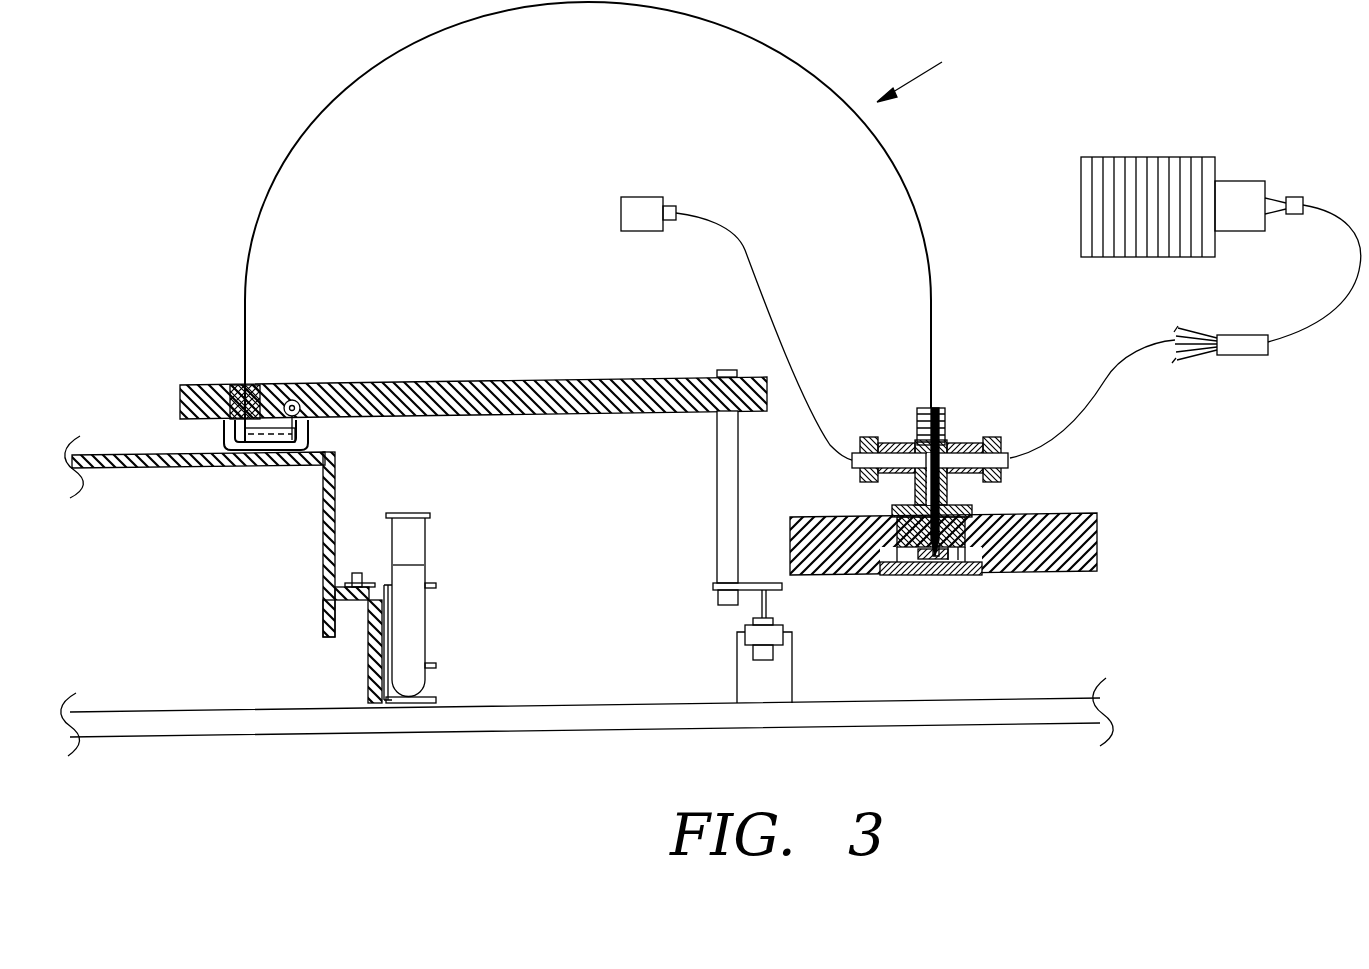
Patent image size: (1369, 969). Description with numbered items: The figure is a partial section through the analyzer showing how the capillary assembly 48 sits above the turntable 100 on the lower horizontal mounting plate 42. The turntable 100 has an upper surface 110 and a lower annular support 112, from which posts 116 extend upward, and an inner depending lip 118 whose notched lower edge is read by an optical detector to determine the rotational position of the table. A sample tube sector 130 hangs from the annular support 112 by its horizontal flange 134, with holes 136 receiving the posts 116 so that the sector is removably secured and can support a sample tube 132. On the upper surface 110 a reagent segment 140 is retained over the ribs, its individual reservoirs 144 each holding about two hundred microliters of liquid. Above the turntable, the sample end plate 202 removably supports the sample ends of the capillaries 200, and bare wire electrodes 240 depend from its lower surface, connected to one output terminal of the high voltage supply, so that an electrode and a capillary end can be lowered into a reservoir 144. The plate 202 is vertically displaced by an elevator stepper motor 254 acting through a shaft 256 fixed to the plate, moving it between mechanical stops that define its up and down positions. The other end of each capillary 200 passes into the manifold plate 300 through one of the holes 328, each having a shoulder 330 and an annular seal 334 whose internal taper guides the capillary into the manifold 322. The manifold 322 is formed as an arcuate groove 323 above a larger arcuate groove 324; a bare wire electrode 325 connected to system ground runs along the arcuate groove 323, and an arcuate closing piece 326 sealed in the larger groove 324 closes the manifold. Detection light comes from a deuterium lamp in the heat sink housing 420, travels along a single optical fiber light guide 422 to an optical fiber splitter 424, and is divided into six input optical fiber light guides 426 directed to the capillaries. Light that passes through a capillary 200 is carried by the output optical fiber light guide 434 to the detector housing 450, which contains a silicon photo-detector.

The lower horizontal mounting plate 42 is at (548, 710).
The capillary assembly 48 is at (925, 69).
The turntable 100 is at (338, 486).
The upper surface 110 is at (172, 452).
The lower annular support 112 is at (335, 587).
The posts 116 is at (358, 573).
The inner depending lip 118 is at (323, 620).
The sample tube sectors 130 is at (437, 585).
The sample tubes 132 is at (408, 513).
The horizontal flange 134 is at (406, 562).
The holes 136 is at (355, 600).
The reagent segments 140 is at (227, 438).
The reservoirs 144 is at (300, 442).
The capillaries 200 is at (321, 125).
The sample end plate 202 is at (497, 381).
The bare wire electrodes 240 is at (312, 436).
The elevator stepper motor 254 is at (772, 629).
The shaft 256 is at (716, 371).
The manifold plate 300 is at (1090, 574).
The manifold 322 is at (880, 576).
The arcuate groove 323 is at (922, 578).
The larger arcuate groove 324 is at (975, 577).
The bare wire electrode 325 is at (935, 578).
The arcuate closing piece 326 is at (950, 578).
The holes 328 is at (960, 506).
The shoulder 330 is at (815, 519).
The annular seal 334 is at (900, 516).
The heat sink housing 420 is at (1133, 157).
The optical fiber light guide 422 is at (1353, 229).
The optical fiber splitter 424 is at (1240, 335).
The input optical fiber light guides 426 is at (1186, 327).
The output optical fiber light guide 434 is at (735, 241).
The detector housing 450 is at (635, 197).